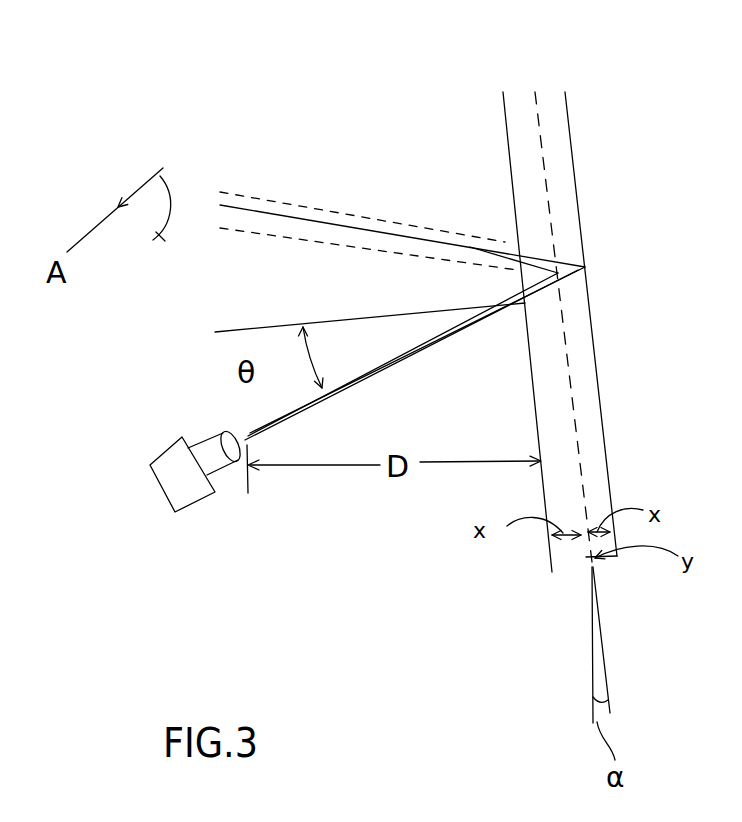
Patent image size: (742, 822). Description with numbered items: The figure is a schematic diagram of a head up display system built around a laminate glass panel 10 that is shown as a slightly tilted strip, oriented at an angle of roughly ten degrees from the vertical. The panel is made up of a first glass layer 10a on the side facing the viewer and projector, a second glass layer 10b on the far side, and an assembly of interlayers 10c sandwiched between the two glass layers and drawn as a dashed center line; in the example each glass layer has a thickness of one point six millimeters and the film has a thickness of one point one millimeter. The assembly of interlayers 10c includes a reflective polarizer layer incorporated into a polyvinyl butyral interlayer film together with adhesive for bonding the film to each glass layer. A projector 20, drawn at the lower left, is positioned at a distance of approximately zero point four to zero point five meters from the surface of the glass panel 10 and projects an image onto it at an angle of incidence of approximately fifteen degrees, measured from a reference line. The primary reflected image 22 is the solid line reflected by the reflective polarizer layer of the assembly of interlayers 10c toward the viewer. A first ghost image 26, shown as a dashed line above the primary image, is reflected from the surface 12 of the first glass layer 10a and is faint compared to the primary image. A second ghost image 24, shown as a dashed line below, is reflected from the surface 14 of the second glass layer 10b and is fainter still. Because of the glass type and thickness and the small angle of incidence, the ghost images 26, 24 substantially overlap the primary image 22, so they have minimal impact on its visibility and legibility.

The laminate glass panel 10 is at (568, 66).
The first glass layer 10a is at (518, 102).
The second glass layer 10b is at (565, 172).
The assembly of interlayers 10c is at (577, 452).
The surface of the first glass layer 12 is at (530, 365).
The surface of the second glass layer 14 is at (585, 320).
The projector 20 is at (163, 517).
The primary reflected image 22 is at (220, 203).
The second ghost image 24 is at (243, 230).
The first ghost image 26 is at (260, 200).